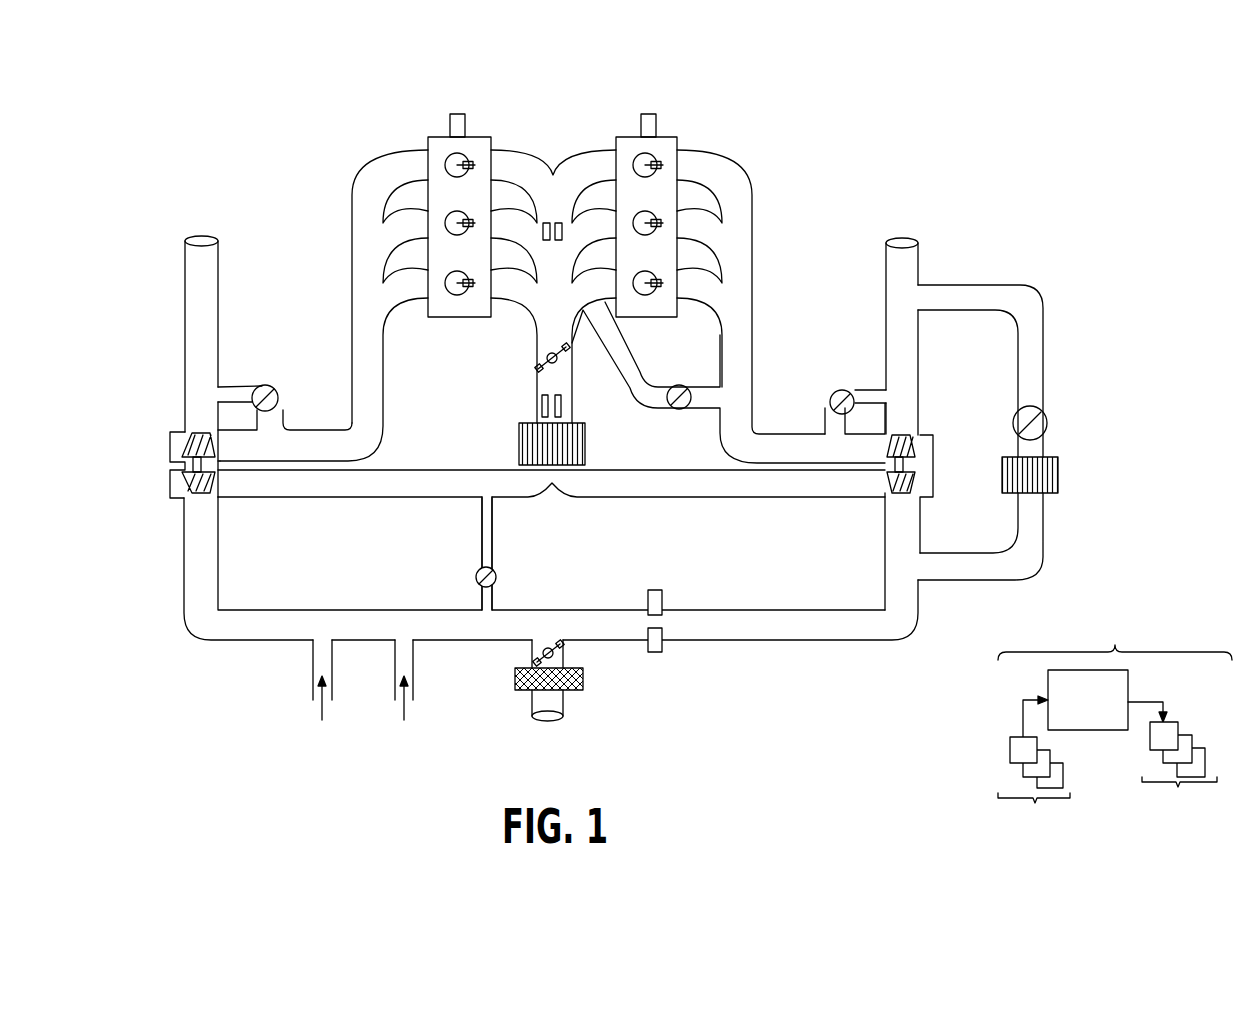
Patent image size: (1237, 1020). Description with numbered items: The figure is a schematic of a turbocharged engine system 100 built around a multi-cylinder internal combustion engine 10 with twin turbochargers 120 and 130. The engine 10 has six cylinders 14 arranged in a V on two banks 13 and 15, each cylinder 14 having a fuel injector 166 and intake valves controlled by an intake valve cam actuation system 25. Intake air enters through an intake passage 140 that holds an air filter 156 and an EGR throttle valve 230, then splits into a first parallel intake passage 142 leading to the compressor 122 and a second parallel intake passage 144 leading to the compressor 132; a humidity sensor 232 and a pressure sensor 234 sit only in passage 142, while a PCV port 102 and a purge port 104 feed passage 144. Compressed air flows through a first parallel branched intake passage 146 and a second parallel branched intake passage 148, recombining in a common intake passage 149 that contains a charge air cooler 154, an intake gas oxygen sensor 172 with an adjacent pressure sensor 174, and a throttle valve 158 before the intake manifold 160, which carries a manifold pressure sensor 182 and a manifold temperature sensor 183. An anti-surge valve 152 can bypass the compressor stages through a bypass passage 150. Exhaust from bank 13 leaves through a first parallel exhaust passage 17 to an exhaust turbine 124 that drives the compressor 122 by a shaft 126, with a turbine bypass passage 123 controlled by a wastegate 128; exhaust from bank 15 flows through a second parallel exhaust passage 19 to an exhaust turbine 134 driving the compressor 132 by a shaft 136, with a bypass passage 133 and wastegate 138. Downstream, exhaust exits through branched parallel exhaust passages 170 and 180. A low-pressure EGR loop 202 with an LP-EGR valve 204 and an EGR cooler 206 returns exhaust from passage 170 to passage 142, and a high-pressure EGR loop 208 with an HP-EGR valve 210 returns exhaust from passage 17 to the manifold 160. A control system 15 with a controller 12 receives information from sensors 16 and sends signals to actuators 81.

The internal combustion engine 10 is at (883, 137).
The turbocharged engine system 100 is at (1143, 136).
The controller 12 is at (1088, 700).
The first bank 13 is at (668, 137).
The cylinder 14 is at (643, 213).
The second bank / control system 15 is at (440, 137).
The sensors 16 is at (1034, 771).
The first parallel exhaust passage 17 is at (753, 374).
The second parallel exhaust passage 19 is at (353, 364).
The intake valve cam actuation system 25 is at (459, 114).
The actuators 81 is at (1173, 768).
The PCV port 102 is at (313, 688).
The purge port 104 is at (395, 688).
The turbocharger 120 is at (910, 499).
The compressor 122 is at (897, 494).
The turbine bypass passage 123 is at (880, 388).
The exhaust turbine 124 is at (912, 440).
The shaft 126 is at (905, 465).
The wastegate 128 is at (831, 394).
The turbocharger 130 is at (194, 453).
The compressor 132 is at (208, 494).
The turbine bypass passage 133 is at (235, 388).
The exhaust turbine 134 is at (187, 441).
The shaft 136 is at (183, 474).
The wastegate 138 is at (274, 392).
The intake passage 140 is at (531, 706).
The first parallel intake passage 142 is at (717, 610).
The second parallel intake passage 144 is at (338, 610).
The first parallel branched intake passage 146 is at (709, 498).
The second parallel branched intake passage 148 is at (312, 498).
The common intake passage 149 is at (534, 343).
The bypass passage 150 is at (493, 536).
The anti-surge valve 152 is at (496, 578).
The charge air cooler 154 is at (586, 443).
The air filter 156 is at (584, 674).
The throttle valve 158 is at (545, 350).
The intake manifold 160 is at (549, 153).
The fuel injector 166 is at (657, 219).
The branched parallel exhaust passage 170 is at (886, 280).
The intake gas oxygen sensor 172 is at (539, 405).
The pressure sensor 174 is at (562, 400).
The branched parallel exhaust passage 180 is at (220, 282).
The intake manifold pressure sensor 182 is at (530, 234).
The intake manifold temperature sensor 183 is at (576, 234).
The low-pressure EGR loop 202 is at (1047, 352).
The LP-EGR valve 204 is at (1043, 415).
The EGR cooler 206 is at (1055, 458).
The high-pressure EGR loop 208 is at (650, 408).
The HP-EGR valve 210 is at (680, 384).
The EGR throttle valve 230 is at (549, 646).
The humidity sensor 232 is at (658, 590).
The pressure sensor 234 is at (660, 652).